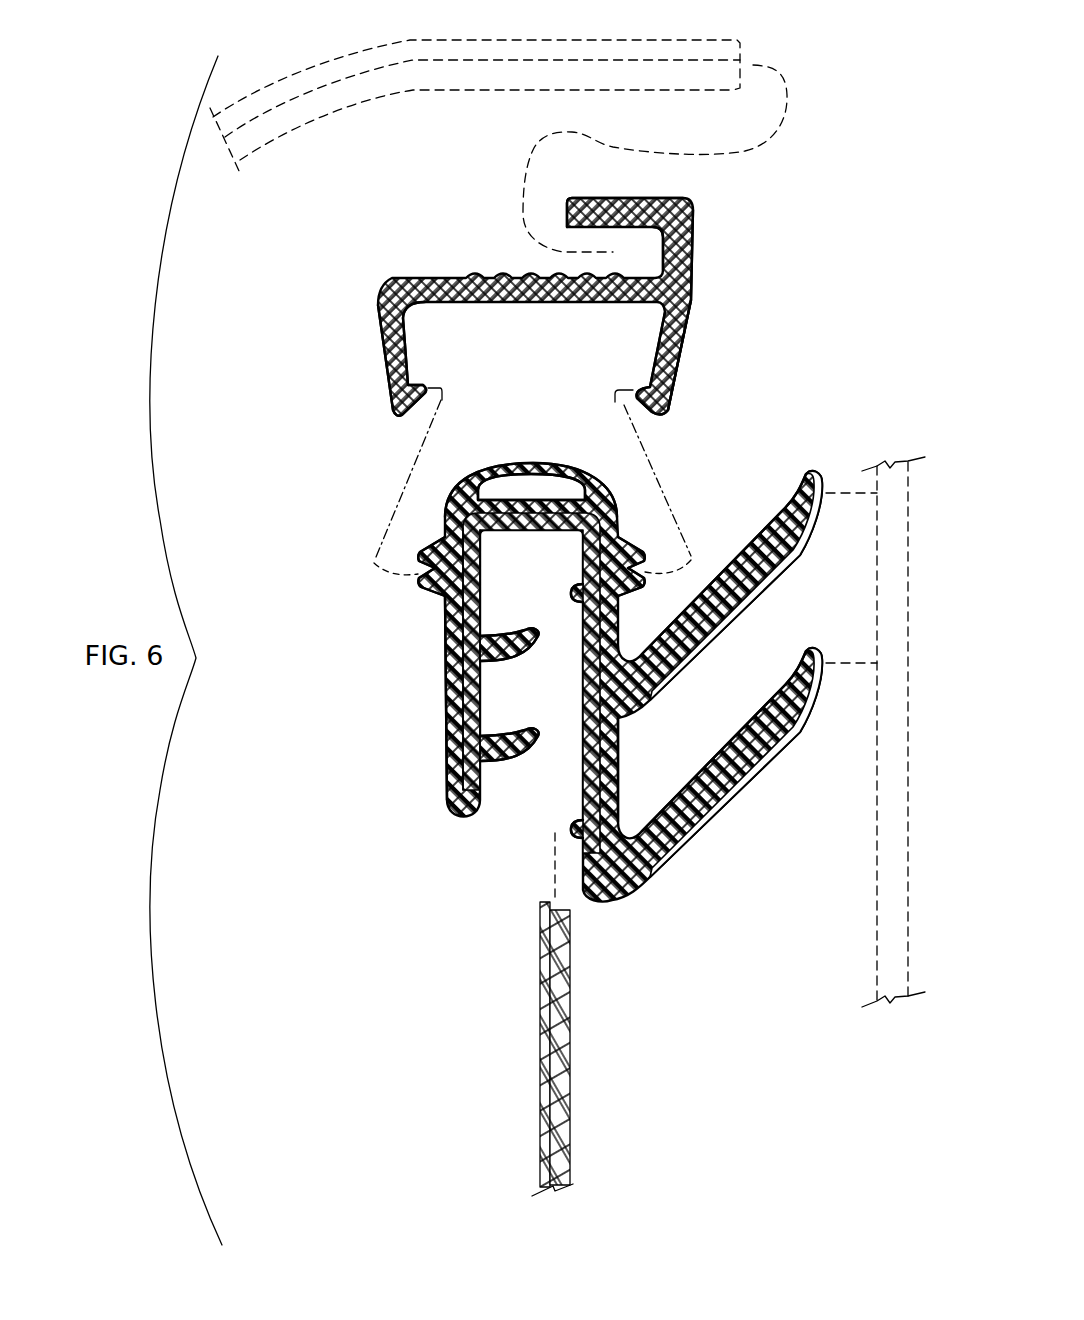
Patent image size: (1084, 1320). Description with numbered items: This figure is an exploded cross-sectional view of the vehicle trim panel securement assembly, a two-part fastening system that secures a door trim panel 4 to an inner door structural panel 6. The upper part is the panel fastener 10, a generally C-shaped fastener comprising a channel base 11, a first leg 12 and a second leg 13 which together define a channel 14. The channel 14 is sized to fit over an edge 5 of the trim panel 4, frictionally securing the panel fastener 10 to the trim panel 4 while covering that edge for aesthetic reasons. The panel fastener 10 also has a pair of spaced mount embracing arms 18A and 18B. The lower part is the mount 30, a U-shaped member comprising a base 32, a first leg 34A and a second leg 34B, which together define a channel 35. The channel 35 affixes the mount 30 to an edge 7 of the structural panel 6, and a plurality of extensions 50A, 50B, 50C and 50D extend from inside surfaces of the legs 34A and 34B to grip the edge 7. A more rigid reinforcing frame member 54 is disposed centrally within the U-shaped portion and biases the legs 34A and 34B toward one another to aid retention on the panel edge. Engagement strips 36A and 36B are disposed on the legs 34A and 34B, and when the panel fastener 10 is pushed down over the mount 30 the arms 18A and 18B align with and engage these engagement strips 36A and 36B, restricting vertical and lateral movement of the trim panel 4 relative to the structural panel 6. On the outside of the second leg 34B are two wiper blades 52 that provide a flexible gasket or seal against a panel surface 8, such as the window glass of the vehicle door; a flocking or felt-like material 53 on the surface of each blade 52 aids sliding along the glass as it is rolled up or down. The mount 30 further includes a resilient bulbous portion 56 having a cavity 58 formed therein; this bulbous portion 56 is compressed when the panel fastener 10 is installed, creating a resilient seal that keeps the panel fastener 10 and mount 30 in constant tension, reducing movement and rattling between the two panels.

The door trim panel 4 is at (310, 62).
The edge of the trim panel 5 is at (743, 53).
The inner door structural panel 6 is at (573, 1153).
The edge of the structural panel 7 is at (540, 1122).
The panel surface 8 is at (908, 508).
The panel fastener 10 is at (697, 225).
The channel base 11 is at (698, 248).
The first leg 12 is at (593, 198).
The second leg 13 is at (380, 312).
The channel 14 is at (648, 237).
The mount embracing arm 18A is at (384, 358).
The mount embracing arm 18B is at (688, 343).
The mount 30 is at (444, 719).
The base 32 is at (523, 531).
The first leg 34A is at (446, 683).
The second leg 34B is at (620, 738).
The channel 35 is at (532, 786).
The engagement strip 36A is at (422, 545).
The engagement strip 36B is at (634, 542).
The extension 50A is at (534, 728).
The extension 50B is at (537, 628).
The extension 50C is at (572, 589).
The extension 50D is at (572, 825).
The wiper blade 52 is at (750, 541).
The flocking 53 is at (800, 553).
The reinforcing frame member 54 is at (462, 782).
The resilient bulbous portion 56 is at (533, 460).
The cavity 58 is at (547, 487).